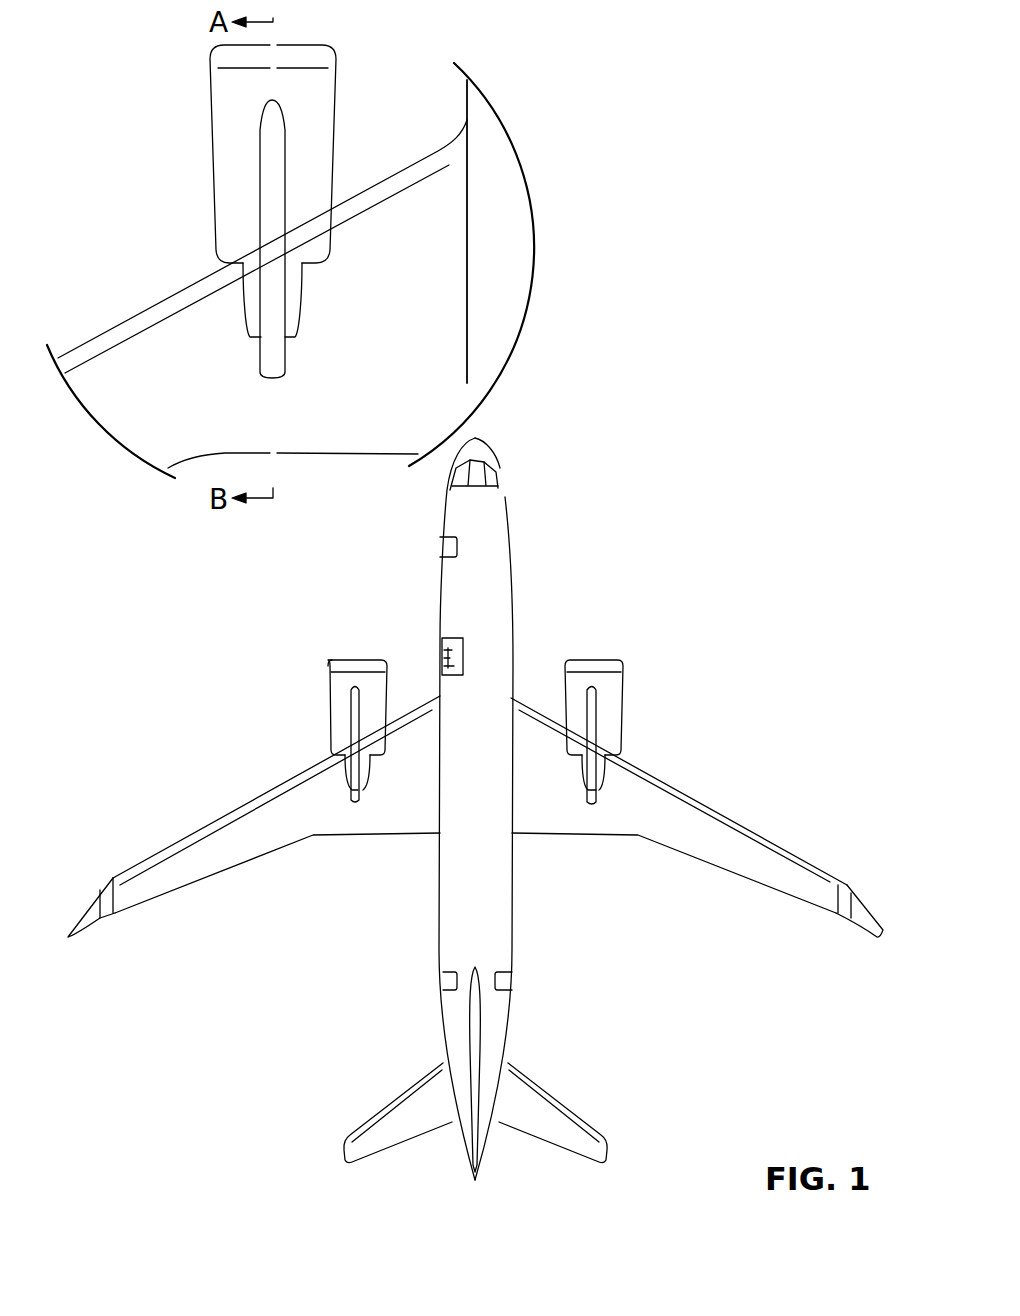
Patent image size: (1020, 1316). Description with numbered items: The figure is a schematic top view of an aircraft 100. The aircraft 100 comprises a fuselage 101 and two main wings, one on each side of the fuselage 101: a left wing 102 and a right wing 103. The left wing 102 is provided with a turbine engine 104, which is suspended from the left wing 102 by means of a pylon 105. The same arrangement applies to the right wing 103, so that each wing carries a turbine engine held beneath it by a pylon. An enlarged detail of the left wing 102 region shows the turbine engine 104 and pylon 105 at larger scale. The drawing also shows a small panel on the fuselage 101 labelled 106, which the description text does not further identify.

The aircraft 100 is at (753, 455).
The fuselage 101 is at (449, 900).
The left wing 102 is at (157, 337).
The right wing 103 is at (713, 848).
The turbine engine 104 is at (215, 102).
The pylon 105 is at (270, 173).
The panel 106 is at (438, 645).